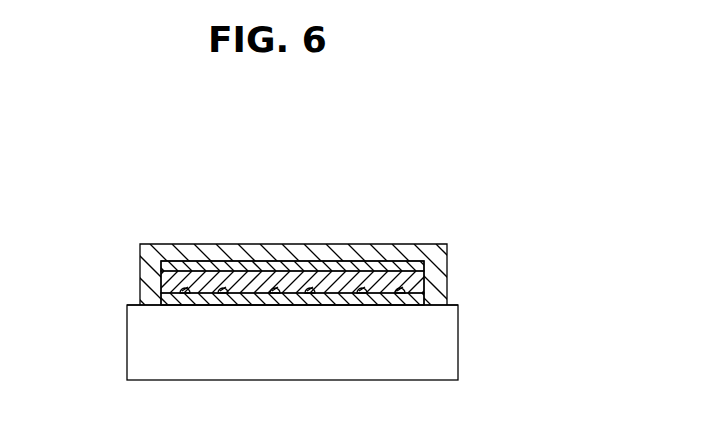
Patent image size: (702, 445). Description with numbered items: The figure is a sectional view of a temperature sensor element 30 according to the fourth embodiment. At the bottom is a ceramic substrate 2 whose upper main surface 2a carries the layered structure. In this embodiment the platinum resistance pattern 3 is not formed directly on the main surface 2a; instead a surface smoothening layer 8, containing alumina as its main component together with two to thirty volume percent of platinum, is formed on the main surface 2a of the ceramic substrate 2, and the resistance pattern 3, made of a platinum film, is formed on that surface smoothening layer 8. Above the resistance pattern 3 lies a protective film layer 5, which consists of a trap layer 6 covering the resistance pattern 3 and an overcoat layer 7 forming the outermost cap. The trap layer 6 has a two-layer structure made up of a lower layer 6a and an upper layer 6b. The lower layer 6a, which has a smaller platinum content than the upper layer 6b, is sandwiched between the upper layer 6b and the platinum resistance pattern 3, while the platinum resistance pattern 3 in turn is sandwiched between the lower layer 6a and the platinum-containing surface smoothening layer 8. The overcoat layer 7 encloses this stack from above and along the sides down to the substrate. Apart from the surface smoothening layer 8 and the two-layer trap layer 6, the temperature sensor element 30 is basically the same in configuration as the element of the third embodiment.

The ceramic substrate 2 is at (447, 351).
The main surface 2a is at (130, 305).
The platinum resistance pattern 3 is at (280, 290).
The protective film layer 5 is at (548, 155).
The trap layer 6 is at (511, 190).
The lower layer 6a is at (426, 270).
The upper layer 6b is at (424, 266).
The overcoat layer 7 is at (410, 257).
The surface smoothening layer 8 is at (332, 296).
The temperature sensor element 30 is at (128, 232).